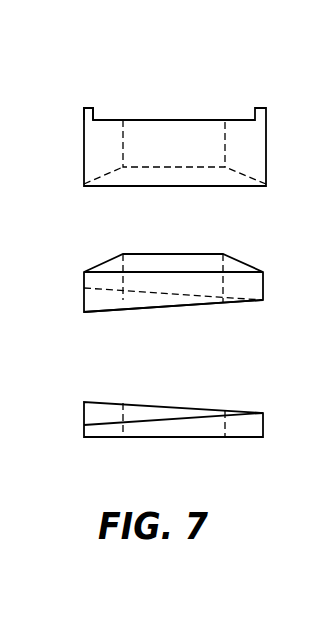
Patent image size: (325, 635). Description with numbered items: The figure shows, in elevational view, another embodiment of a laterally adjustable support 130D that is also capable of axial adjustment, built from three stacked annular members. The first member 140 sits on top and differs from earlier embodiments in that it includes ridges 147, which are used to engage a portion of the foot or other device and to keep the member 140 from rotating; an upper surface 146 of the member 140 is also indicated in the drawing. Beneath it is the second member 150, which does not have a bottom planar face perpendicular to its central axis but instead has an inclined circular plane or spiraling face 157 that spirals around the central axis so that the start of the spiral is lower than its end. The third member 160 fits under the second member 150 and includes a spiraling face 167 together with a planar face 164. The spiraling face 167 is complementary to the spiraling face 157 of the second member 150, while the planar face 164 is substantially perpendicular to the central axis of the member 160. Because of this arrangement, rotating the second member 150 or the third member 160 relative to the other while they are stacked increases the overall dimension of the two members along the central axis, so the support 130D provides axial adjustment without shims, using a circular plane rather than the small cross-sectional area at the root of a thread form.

The support 130D is at (114, 63).
The first member 140 is at (76, 151).
The top surface recess 146 is at (174, 120).
The ridges 147 is at (89, 108).
The second member 150 is at (75, 293).
The spiraling face 157 is at (205, 306).
The third member 160 is at (75, 419).
The planar face 164 is at (98, 438).
The spiraling face 167 is at (192, 414).